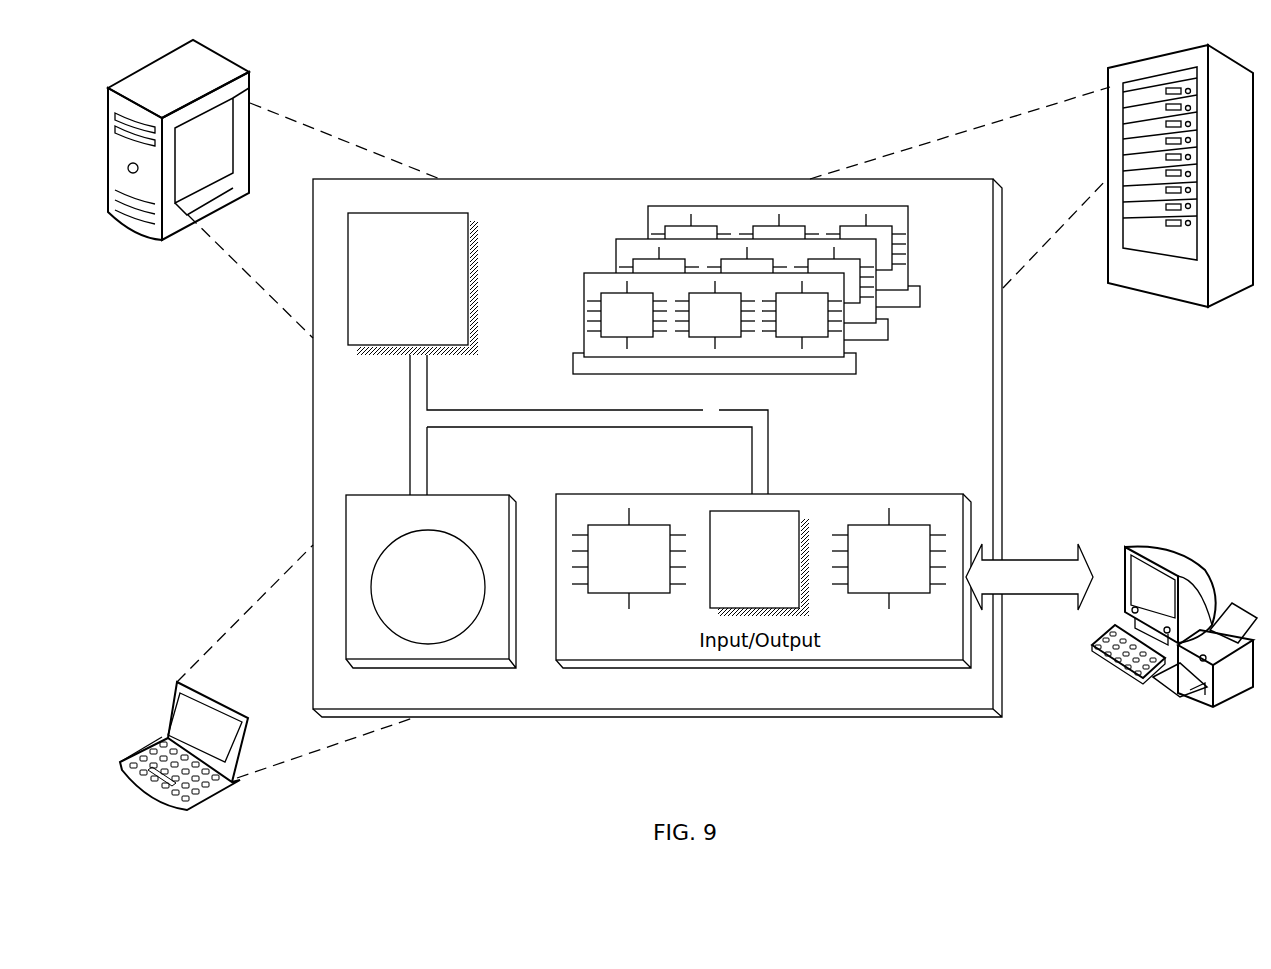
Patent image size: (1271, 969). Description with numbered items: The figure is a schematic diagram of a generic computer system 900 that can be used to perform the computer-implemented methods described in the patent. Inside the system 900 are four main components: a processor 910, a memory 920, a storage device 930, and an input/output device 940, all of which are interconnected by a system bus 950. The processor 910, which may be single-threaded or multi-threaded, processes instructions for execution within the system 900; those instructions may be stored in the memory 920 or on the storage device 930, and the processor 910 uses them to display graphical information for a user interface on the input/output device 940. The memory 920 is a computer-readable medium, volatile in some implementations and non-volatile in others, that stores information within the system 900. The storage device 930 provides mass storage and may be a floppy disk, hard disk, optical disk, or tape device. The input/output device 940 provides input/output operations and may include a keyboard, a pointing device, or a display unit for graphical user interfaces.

The computer system 900 is at (490, 60).
The processor 910 is at (413, 284).
The memory 920 is at (916, 340).
The storage device 930 is at (431, 581).
The input/output device 940 is at (1127, 547).
The system bus 950 is at (584, 428).